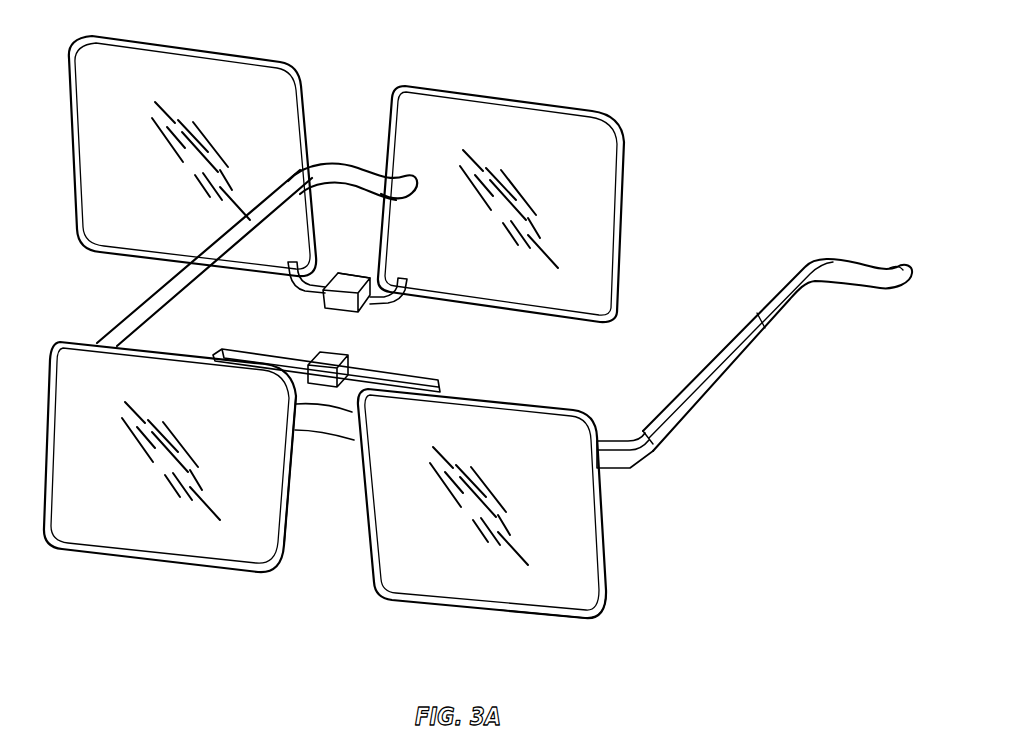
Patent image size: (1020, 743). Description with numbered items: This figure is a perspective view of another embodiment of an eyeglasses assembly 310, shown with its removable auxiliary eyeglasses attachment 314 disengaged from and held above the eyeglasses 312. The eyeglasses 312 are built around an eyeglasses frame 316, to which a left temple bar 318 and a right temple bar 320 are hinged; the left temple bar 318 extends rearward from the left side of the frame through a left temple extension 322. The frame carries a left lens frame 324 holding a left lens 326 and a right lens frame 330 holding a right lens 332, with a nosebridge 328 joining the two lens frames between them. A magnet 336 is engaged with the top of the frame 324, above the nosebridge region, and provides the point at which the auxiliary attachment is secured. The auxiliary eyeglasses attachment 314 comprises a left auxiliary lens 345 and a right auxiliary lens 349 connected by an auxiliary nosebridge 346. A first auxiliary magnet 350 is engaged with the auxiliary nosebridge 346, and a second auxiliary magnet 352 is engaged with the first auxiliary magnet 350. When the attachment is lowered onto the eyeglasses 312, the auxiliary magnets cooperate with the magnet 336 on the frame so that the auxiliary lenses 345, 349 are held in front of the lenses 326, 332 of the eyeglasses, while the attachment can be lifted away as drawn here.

The eyeglasses assembly 310 is at (679, 98).
The eyeglasses 312 is at (624, 558).
The auxiliary eyeglasses attachment 314 is at (655, 221).
The eyeglasses frame 316 is at (603, 532).
The left temple bar 318 is at (718, 378).
The right temple bar 320 is at (141, 303).
The left temple extension 322 is at (633, 465).
The left lens frame 324 is at (601, 614).
The left lens 326 is at (557, 603).
The nosebridge 328 is at (329, 432).
The right lens frame 330 is at (285, 523).
The right lens 332 is at (141, 556).
The magnet 336 is at (352, 360).
The left auxiliary lens 345 is at (508, 103).
The auxiliary nosebridge 346 is at (400, 298).
The right auxiliary lens 349 is at (162, 52).
The first auxiliary magnet 350 is at (333, 309).
The second auxiliary magnet 352 is at (342, 273).